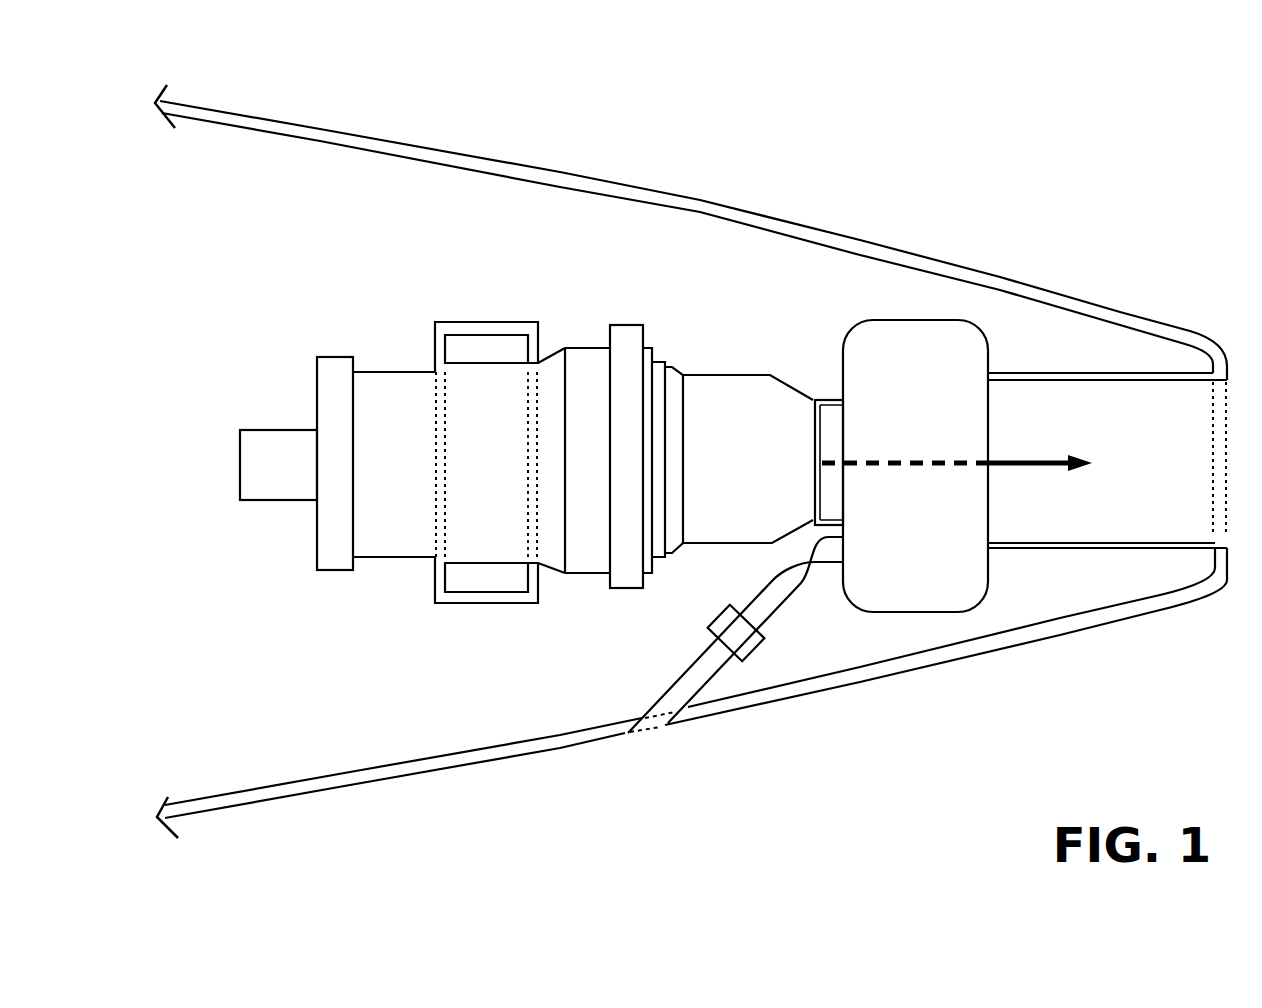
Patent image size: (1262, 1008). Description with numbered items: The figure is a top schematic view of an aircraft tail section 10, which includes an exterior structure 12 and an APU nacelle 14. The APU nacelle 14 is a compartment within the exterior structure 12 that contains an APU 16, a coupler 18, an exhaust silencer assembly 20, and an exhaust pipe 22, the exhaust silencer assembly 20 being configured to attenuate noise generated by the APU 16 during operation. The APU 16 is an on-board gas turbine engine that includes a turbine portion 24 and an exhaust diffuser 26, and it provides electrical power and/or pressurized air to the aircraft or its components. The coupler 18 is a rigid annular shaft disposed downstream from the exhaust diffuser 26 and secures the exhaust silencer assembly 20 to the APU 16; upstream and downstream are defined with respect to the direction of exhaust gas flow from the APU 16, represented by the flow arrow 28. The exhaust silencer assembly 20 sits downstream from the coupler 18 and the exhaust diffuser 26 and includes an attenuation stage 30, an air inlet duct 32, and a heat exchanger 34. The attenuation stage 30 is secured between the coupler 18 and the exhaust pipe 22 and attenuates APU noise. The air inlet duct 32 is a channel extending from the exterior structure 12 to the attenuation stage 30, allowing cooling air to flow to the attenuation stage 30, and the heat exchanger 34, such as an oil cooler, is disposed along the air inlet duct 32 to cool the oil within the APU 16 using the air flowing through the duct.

The aircraft tail section 10 is at (691, 455).
The exterior structure 12 is at (316, 123).
The APU nacelle 14 is at (482, 188).
The APU 16 is at (419, 636).
The coupler 18 is at (833, 400).
The exhaust silencer assembly 20 is at (864, 643).
The exhaust pipe 22 is at (1040, 372).
The turbine portion 24 is at (592, 357).
The exhaust diffuser 26 is at (727, 388).
The flow arrow 28 is at (1053, 458).
The attenuation stage 30 is at (887, 338).
The air inlet duct 32 is at (773, 581).
The heat exchanger 34 is at (742, 640).